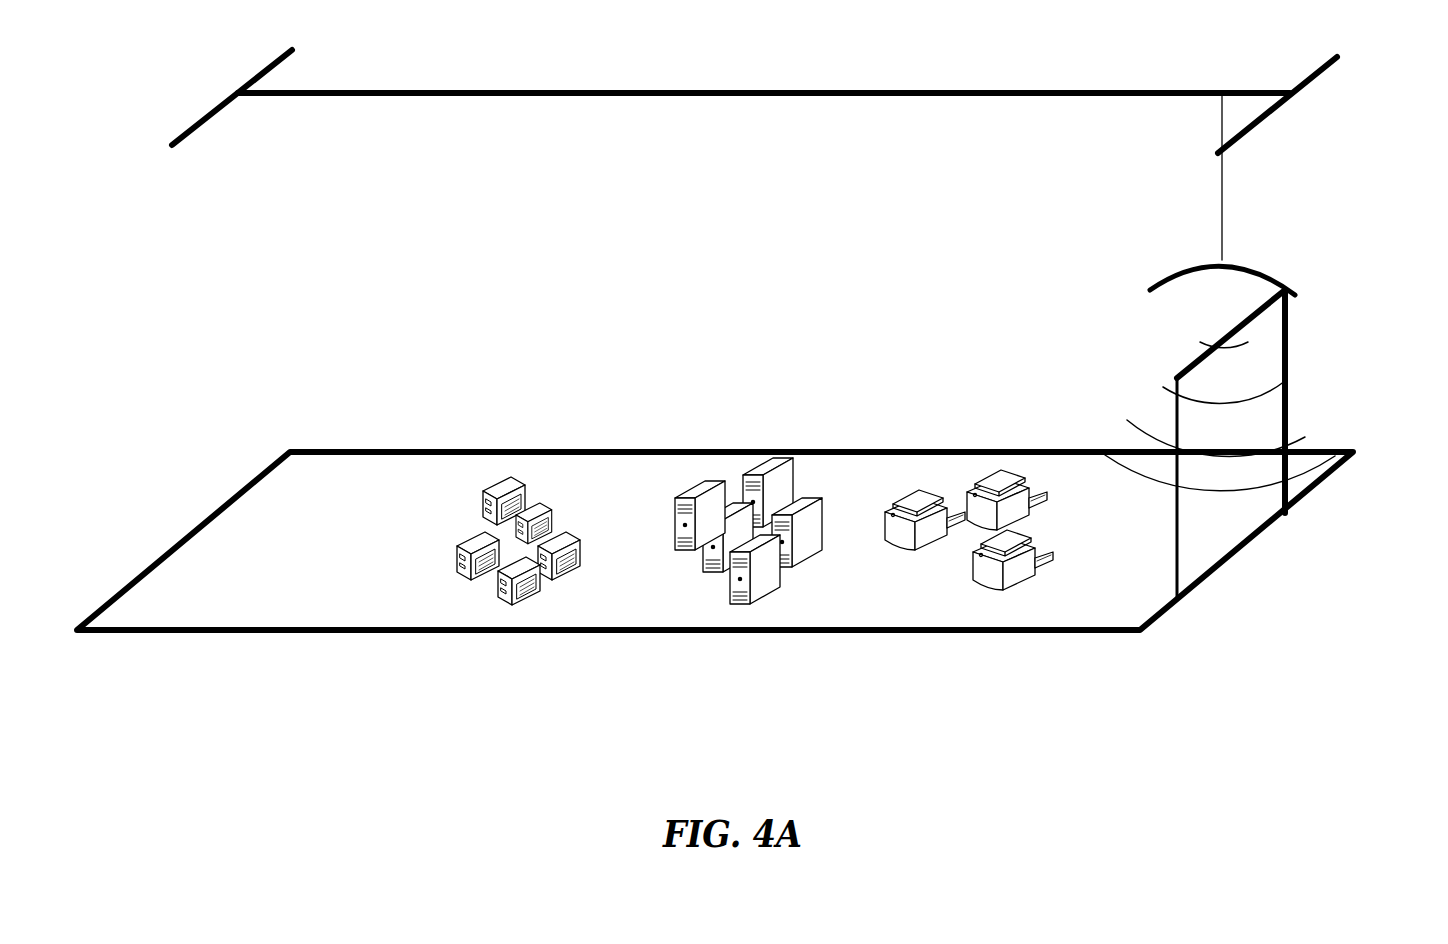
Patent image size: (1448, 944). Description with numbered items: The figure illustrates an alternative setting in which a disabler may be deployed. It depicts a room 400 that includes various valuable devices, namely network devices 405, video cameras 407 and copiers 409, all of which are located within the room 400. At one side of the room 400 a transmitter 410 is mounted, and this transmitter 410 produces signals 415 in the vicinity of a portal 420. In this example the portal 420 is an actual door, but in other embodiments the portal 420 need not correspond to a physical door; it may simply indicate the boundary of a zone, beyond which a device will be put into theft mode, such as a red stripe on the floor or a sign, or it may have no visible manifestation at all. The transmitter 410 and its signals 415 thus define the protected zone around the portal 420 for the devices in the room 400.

The room 400 is at (267, 703).
The network devices 405 is at (797, 580).
The video cameras 407 is at (552, 588).
The copiers 409 is at (987, 585).
The transmitter 410 is at (1253, 267).
The signals 415 is at (1300, 430).
The portal 420 is at (1218, 523).